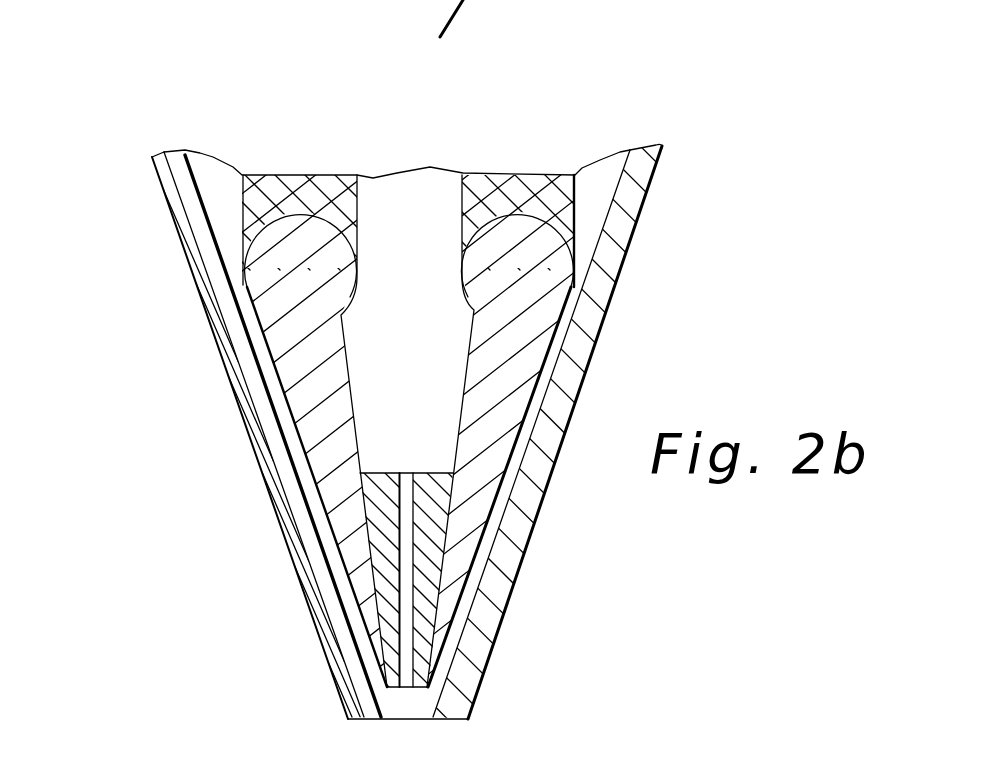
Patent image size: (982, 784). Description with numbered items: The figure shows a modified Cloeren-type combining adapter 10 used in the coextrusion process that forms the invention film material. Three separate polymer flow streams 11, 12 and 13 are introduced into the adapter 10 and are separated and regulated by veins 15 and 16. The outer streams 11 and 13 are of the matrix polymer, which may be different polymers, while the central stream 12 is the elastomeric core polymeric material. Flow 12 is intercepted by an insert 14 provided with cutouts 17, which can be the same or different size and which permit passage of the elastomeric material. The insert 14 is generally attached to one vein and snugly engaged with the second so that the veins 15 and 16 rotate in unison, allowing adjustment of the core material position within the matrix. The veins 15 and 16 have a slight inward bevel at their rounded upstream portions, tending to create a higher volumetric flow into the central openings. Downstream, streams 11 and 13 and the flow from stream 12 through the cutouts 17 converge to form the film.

The combining adapter 10 is at (668, 183).
The polymer flow stream 11 is at (217, 220).
The polymer flow stream 12 is at (405, 438).
The polymer flow stream 13 is at (597, 230).
The insert 14 is at (467, 360).
The vein 15 is at (285, 227).
The vein 16 is at (515, 222).
The cutouts 17 is at (405, 633).